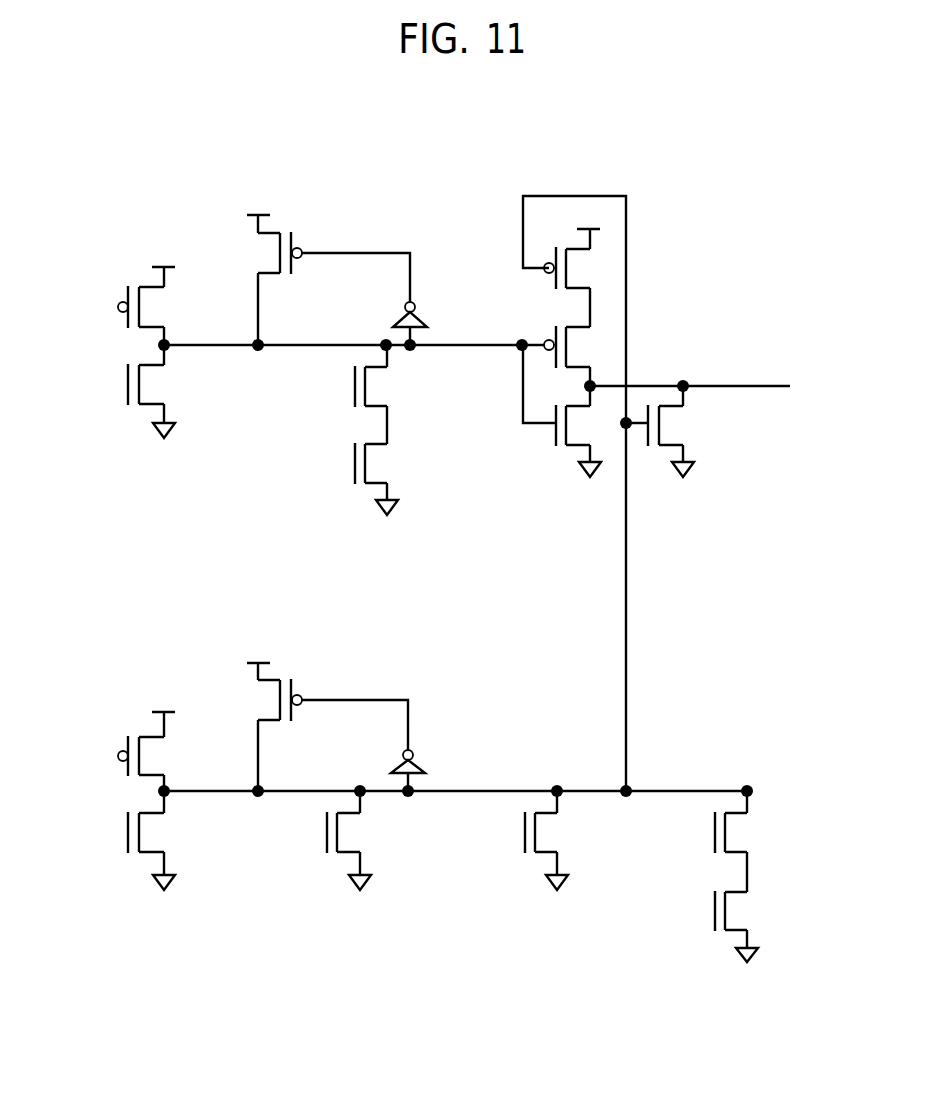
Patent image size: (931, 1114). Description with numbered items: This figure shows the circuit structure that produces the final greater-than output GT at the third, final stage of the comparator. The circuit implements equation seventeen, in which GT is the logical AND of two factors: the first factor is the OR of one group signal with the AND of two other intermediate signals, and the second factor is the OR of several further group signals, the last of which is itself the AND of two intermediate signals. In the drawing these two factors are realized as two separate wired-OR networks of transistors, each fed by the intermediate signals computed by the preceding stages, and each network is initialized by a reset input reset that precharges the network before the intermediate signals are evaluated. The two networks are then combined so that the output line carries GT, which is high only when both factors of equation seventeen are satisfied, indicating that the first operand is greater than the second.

The reset PMOS transistor (upper) reset is at (118, 307).
The GT (greater than) output GT is at (720, 385).